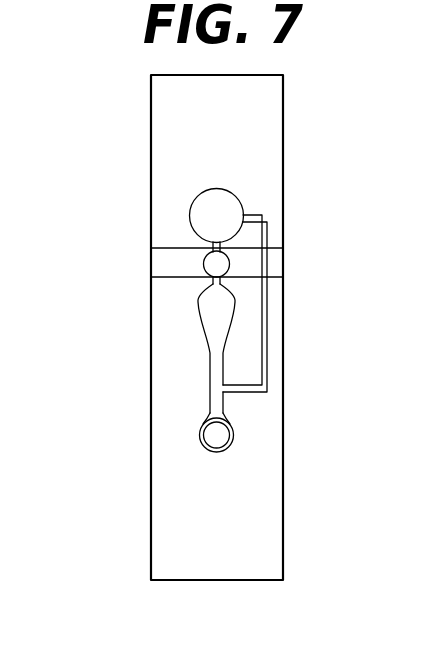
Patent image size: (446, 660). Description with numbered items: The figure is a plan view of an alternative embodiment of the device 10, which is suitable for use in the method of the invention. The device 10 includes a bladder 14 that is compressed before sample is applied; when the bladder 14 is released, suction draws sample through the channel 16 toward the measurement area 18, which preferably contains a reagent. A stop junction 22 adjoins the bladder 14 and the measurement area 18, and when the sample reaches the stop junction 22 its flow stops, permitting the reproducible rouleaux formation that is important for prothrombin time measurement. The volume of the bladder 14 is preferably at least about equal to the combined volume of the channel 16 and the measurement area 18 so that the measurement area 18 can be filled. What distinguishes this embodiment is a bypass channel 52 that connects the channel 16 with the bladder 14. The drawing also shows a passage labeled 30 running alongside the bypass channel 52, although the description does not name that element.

The device 10 is at (130, 129).
The bladder 14 is at (190, 213).
The stop junction 22 is at (203, 264).
The measurement area 18 is at (198, 300).
The channel 16 is at (210, 404).
The bypass channel 30 is at (274, 247).
The bypass channel 52 is at (267, 290).